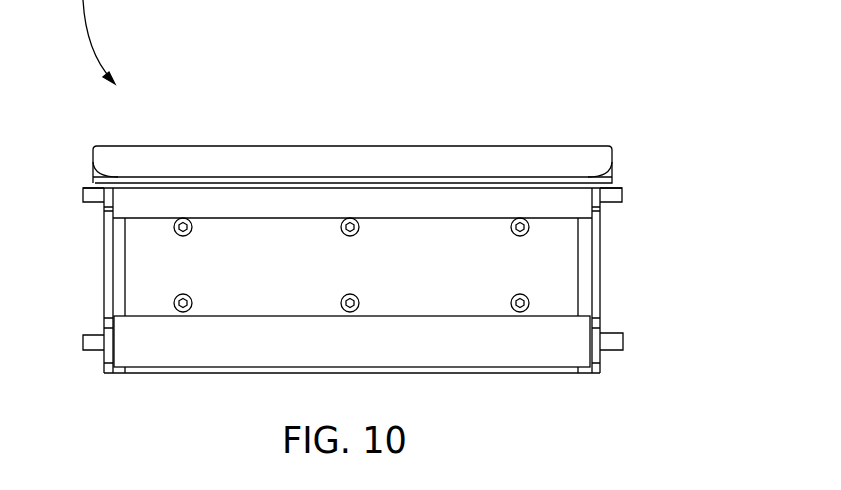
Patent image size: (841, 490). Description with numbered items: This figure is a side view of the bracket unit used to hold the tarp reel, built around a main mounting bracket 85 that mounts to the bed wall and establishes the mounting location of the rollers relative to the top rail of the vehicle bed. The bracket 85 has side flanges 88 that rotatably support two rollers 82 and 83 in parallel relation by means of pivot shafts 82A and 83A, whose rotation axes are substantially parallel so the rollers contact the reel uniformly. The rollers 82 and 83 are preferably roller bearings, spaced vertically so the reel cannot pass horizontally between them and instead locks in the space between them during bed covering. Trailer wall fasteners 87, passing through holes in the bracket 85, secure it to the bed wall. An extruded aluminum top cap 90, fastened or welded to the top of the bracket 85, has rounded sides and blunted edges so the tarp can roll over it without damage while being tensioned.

The top cap 90 is at (347, 158).
The roller 83 is at (125, 211).
The pivot shaft 83A is at (615, 187).
The main mounting bracket 85 is at (602, 248).
The side flange 88 is at (108, 288).
The roller 82 is at (158, 358).
The pivot shaft 82A is at (610, 338).
The trailer wall fastener 87 is at (520, 312).